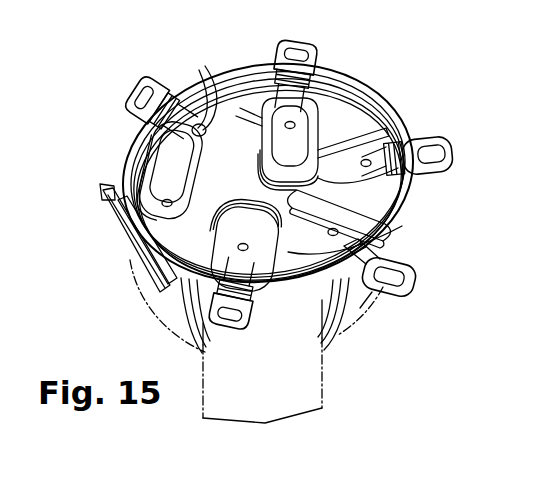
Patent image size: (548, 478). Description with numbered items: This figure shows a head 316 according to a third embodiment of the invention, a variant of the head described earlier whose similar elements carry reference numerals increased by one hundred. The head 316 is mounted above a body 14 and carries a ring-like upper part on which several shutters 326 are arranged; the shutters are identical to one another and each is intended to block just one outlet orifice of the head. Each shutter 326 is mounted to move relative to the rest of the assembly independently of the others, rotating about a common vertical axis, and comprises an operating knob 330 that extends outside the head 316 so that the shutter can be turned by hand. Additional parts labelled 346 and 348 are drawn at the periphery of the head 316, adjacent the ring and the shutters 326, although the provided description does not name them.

The container 14 is at (323, 396).
The head 316 is at (356, 70).
The shutter 326 is at (414, 284).
The operating knob 330 is at (312, 50).
The strap 346 is at (118, 136).
The strap end 348 is at (203, 73).